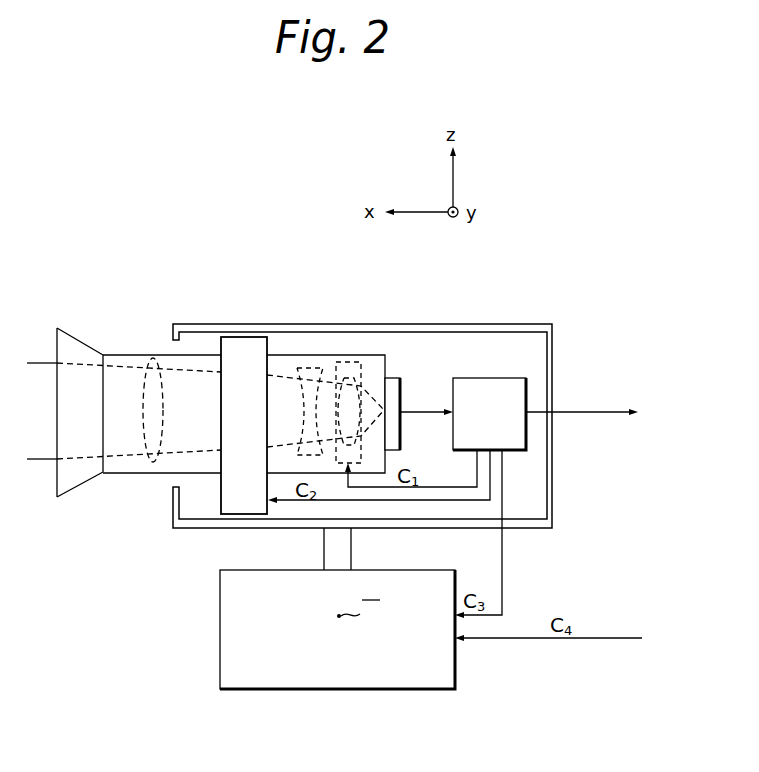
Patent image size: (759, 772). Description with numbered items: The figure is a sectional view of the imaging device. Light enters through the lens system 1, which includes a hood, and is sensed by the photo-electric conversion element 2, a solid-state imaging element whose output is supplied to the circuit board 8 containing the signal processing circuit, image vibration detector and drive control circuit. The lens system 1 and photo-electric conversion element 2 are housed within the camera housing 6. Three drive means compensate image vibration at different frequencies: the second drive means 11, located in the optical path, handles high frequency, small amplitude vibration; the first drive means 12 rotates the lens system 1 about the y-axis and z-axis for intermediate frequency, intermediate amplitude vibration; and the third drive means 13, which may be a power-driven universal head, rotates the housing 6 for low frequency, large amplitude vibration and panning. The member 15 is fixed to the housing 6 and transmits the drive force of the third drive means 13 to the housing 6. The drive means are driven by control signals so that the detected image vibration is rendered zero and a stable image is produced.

The lens system 1 is at (149, 356).
The photo-electric conversion element 2 is at (402, 390).
The housing 6 is at (537, 324).
The circuit board 8 is at (527, 395).
The second drive means 11 is at (363, 380).
The first drive means 12 is at (268, 346).
The third drive means 13 is at (220, 650).
The member 15 is at (352, 546).